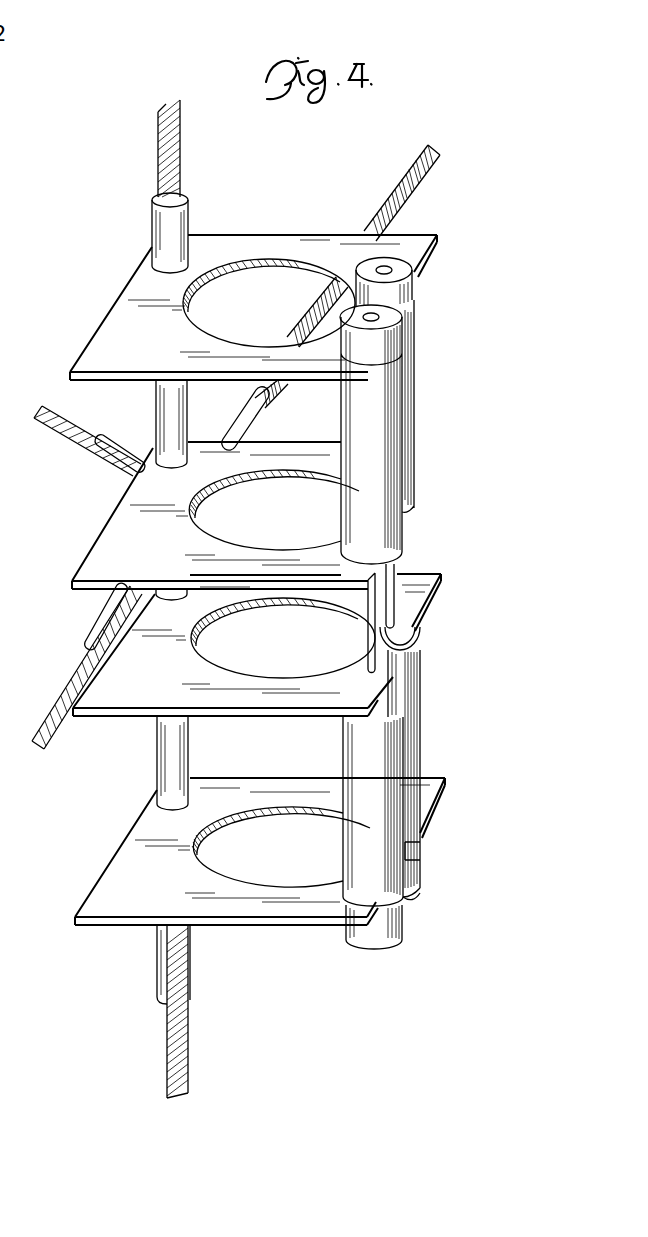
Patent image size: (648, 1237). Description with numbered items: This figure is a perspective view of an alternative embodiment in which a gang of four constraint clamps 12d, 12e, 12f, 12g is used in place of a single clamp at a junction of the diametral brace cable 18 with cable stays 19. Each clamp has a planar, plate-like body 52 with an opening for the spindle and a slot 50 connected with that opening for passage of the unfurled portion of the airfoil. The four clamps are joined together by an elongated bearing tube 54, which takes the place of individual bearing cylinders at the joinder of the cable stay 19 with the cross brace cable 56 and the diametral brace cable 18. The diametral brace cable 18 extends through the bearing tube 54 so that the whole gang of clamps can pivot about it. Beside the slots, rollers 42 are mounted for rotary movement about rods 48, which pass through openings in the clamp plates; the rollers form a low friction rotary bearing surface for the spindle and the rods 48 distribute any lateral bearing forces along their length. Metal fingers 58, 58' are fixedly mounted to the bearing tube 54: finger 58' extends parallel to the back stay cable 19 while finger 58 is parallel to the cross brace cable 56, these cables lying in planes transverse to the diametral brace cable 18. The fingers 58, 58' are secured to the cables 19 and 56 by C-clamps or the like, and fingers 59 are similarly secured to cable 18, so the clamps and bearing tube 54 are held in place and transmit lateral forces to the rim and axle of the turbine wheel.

The constraint clamp 12d is at (102, 287).
The constraint clamp 12e is at (93, 518).
The constraint clamp 12f is at (88, 726).
The constraint clamp 12g is at (66, 935).
The diametral brace cable 18 is at (182, 130).
The cable stay 19 is at (46, 410).
The roller 42 is at (412, 353).
The rod 48 is at (396, 585).
The slot 50 is at (420, 650).
The plate-like body 52 is at (157, 352).
The bearing tube 54 is at (157, 411).
The cross brace cable 56 is at (66, 692).
The finger 58 is at (163, 518).
The finger 58' is at (111, 471).
The finger 59 is at (157, 178).